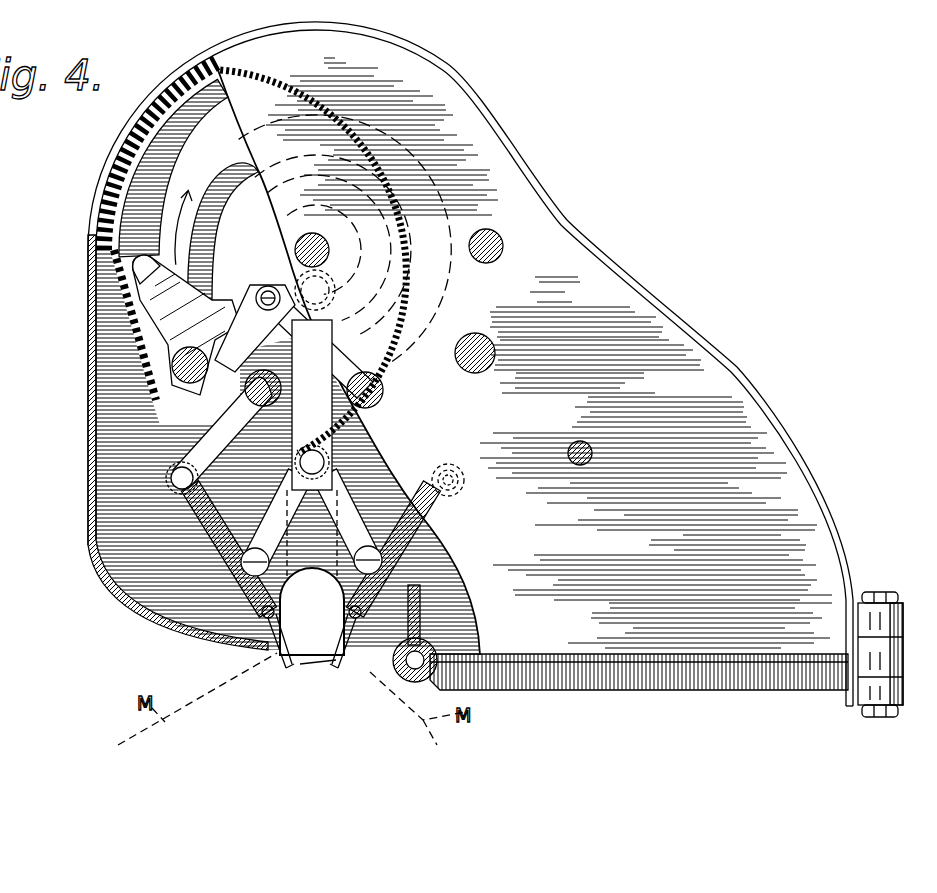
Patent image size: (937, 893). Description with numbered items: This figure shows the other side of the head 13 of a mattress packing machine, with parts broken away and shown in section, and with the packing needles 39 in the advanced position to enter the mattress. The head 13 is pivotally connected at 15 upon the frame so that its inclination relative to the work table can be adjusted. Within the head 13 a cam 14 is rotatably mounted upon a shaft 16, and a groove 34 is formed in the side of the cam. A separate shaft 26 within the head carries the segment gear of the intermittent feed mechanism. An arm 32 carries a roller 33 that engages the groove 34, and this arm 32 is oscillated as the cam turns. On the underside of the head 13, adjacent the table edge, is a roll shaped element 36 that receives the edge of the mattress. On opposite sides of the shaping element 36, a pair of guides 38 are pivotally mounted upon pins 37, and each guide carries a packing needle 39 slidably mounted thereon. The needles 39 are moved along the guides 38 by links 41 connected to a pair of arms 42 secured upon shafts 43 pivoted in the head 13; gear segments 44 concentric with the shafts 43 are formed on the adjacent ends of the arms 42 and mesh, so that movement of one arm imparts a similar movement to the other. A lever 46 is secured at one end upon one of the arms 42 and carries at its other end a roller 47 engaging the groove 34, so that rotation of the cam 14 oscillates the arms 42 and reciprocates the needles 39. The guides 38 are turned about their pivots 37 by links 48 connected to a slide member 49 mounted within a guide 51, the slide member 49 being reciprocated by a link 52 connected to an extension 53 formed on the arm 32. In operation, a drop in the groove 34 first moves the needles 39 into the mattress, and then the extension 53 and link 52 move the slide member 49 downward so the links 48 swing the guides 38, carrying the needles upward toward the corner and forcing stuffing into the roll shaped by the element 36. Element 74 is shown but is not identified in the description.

The head 13 is at (568, 228).
The cam 14 is at (231, 143).
The pivotal connection 15 is at (418, 673).
The shaft 16 is at (310, 252).
The shaft 26 is at (472, 340).
The arm 32 is at (152, 283).
The roller 33 is at (125, 267).
The groove 34 is at (140, 183).
The roll shaped element 36 is at (317, 583).
The pins 37 is at (262, 625).
The guides 38 is at (237, 533).
The packing needle 39 is at (332, 661).
The links 41 is at (225, 511).
The arms 42 is at (418, 388).
The shafts 43 is at (254, 400).
The gear segments 44 is at (240, 368).
The lever 46 is at (191, 384).
The roller 47 is at (257, 300).
The links 48 is at (372, 478).
The slide member 49 is at (318, 438).
The guide 51 is at (425, 434).
The link 52 is at (300, 322).
The extension 53 is at (216, 302).
The stud 74 is at (490, 250).